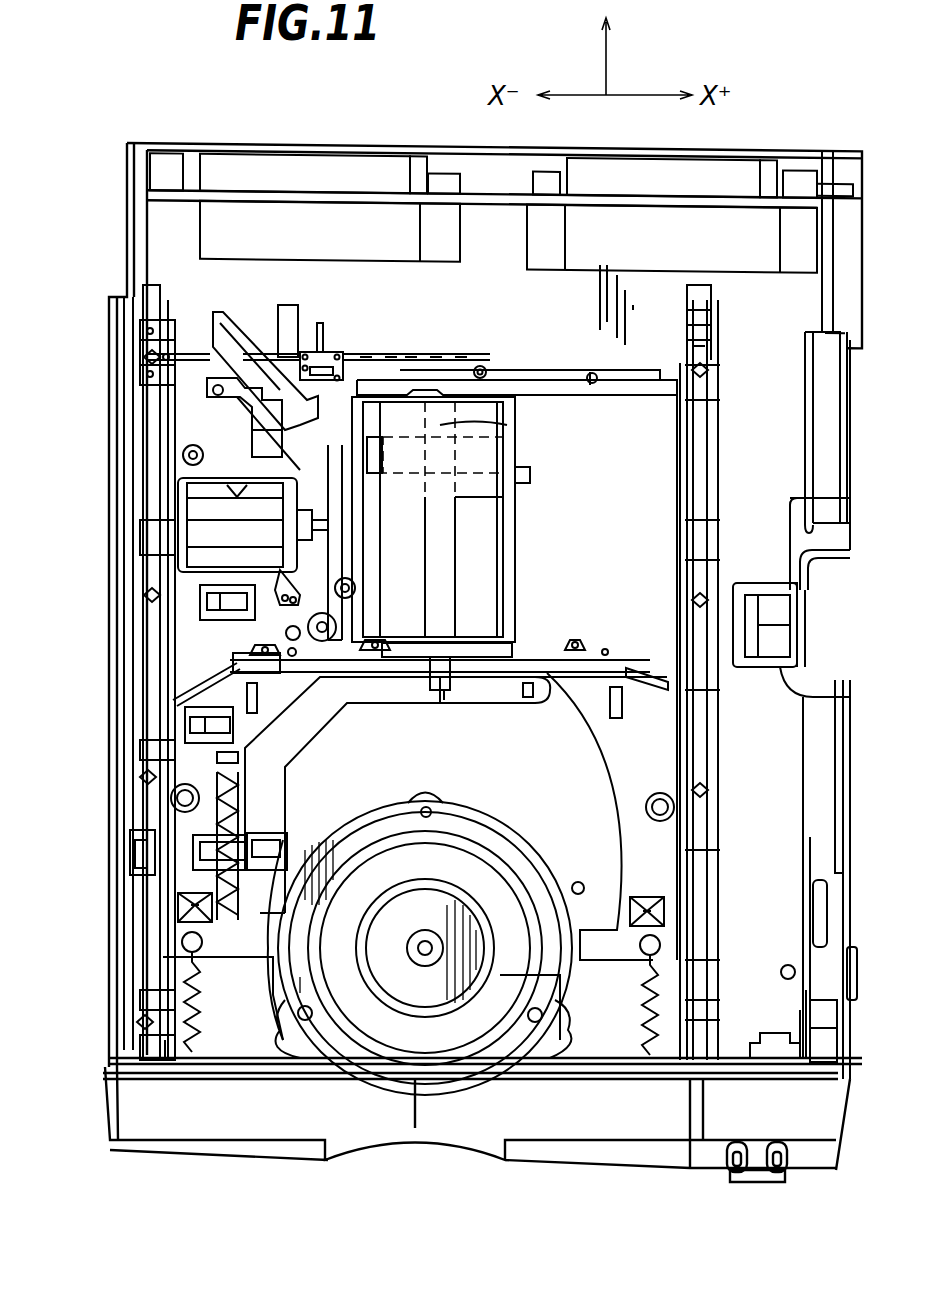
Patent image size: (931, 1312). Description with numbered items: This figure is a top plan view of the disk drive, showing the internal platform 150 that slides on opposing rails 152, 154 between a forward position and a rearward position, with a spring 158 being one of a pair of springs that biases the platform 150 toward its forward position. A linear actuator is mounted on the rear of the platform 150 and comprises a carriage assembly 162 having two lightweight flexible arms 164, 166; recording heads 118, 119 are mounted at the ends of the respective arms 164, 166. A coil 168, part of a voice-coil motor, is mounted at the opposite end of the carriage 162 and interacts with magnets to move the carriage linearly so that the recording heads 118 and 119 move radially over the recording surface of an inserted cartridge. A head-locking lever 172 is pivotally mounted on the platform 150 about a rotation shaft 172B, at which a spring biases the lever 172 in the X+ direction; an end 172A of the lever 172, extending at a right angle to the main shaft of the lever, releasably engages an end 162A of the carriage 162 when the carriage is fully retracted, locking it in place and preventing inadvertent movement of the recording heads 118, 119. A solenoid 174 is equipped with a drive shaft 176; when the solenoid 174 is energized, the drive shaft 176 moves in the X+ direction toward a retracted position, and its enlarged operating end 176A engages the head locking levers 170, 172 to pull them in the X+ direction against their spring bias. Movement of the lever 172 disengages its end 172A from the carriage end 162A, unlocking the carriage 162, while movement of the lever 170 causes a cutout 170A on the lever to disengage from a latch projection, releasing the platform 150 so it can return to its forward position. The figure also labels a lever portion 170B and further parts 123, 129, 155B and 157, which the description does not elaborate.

The recording head 118 is at (450, 697).
The recording head 119 is at (539, 715).
The stop 123 is at (613, 703).
The latch block 129 is at (260, 700).
The internal platform 150 is at (597, 832).
The rail 152 is at (158, 558).
The rail 154 is at (705, 490).
The tab 155B is at (657, 643).
The carriage plate 157 is at (300, 703).
The spring 158 is at (190, 1023).
The carriage assembly 162 is at (457, 497).
The end of actuator carriage 162A is at (440, 423).
The flexible arm 164 is at (440, 650).
The flexible arm 166 is at (518, 567).
The coil 168 is at (490, 458).
The head locking lever 170 is at (287, 438).
The cutout 170A is at (278, 392).
The lever pivot 170B is at (327, 640).
The head-locking lever 172 is at (362, 398).
The end of lever 172A is at (432, 387).
The rotation shaft 172B is at (357, 587).
The solenoid 174 is at (197, 488).
The drive shaft 176 is at (310, 533).
The enlarged operating end 176A is at (337, 522).